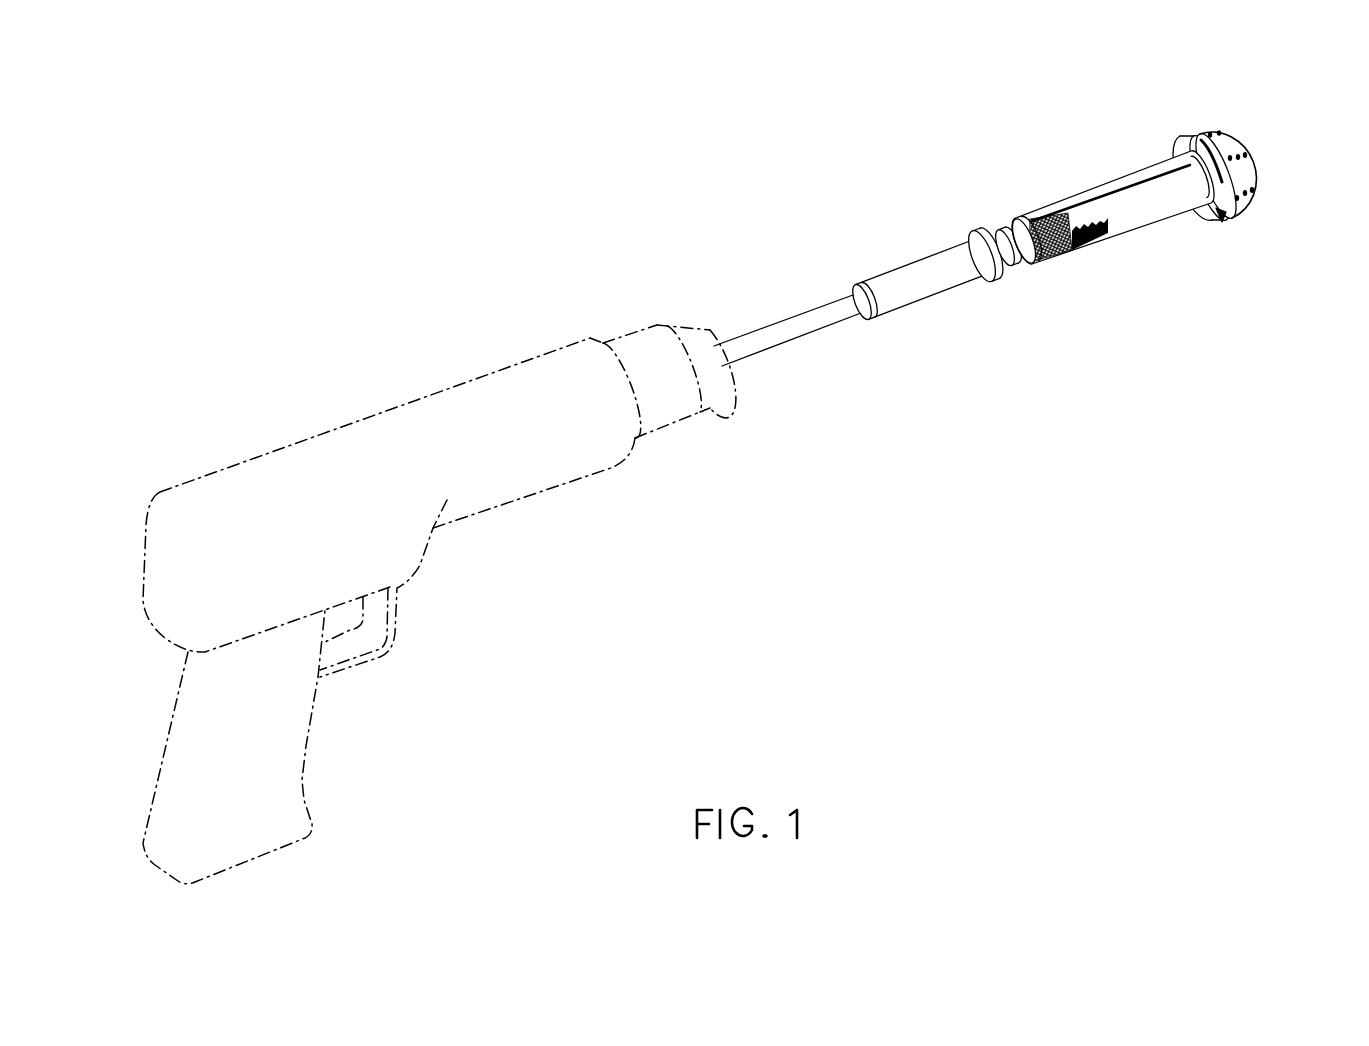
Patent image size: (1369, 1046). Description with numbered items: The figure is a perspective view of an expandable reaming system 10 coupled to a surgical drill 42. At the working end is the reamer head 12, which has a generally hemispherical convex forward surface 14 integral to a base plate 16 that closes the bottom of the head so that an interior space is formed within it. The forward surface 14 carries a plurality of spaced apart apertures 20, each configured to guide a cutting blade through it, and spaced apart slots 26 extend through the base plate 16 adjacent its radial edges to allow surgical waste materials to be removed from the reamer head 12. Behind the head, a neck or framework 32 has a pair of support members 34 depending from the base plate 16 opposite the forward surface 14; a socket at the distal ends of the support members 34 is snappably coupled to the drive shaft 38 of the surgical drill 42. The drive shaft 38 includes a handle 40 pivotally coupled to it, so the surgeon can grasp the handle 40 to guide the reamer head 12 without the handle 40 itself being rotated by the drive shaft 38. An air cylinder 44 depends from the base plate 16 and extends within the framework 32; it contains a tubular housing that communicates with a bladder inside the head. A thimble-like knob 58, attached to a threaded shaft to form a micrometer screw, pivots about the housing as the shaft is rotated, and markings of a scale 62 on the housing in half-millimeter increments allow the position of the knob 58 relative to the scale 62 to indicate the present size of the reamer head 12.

The expandable reaming system 10 is at (787, 163).
The reamer head 12 is at (1242, 149).
The forward surface 14 is at (1258, 168).
The base plate 16 is at (1188, 138).
The apertures 20 is at (1245, 153).
The slots 26 is at (1227, 220).
The framework 32 is at (1106, 150).
The support members 34 is at (1078, 209).
The drive shaft 38 is at (758, 360).
The handle 40 is at (893, 312).
The surgical drill 42 is at (313, 397).
The air cylinder 44 is at (1180, 210).
The knob 58 is at (1057, 258).
The scale 62 is at (1093, 240).